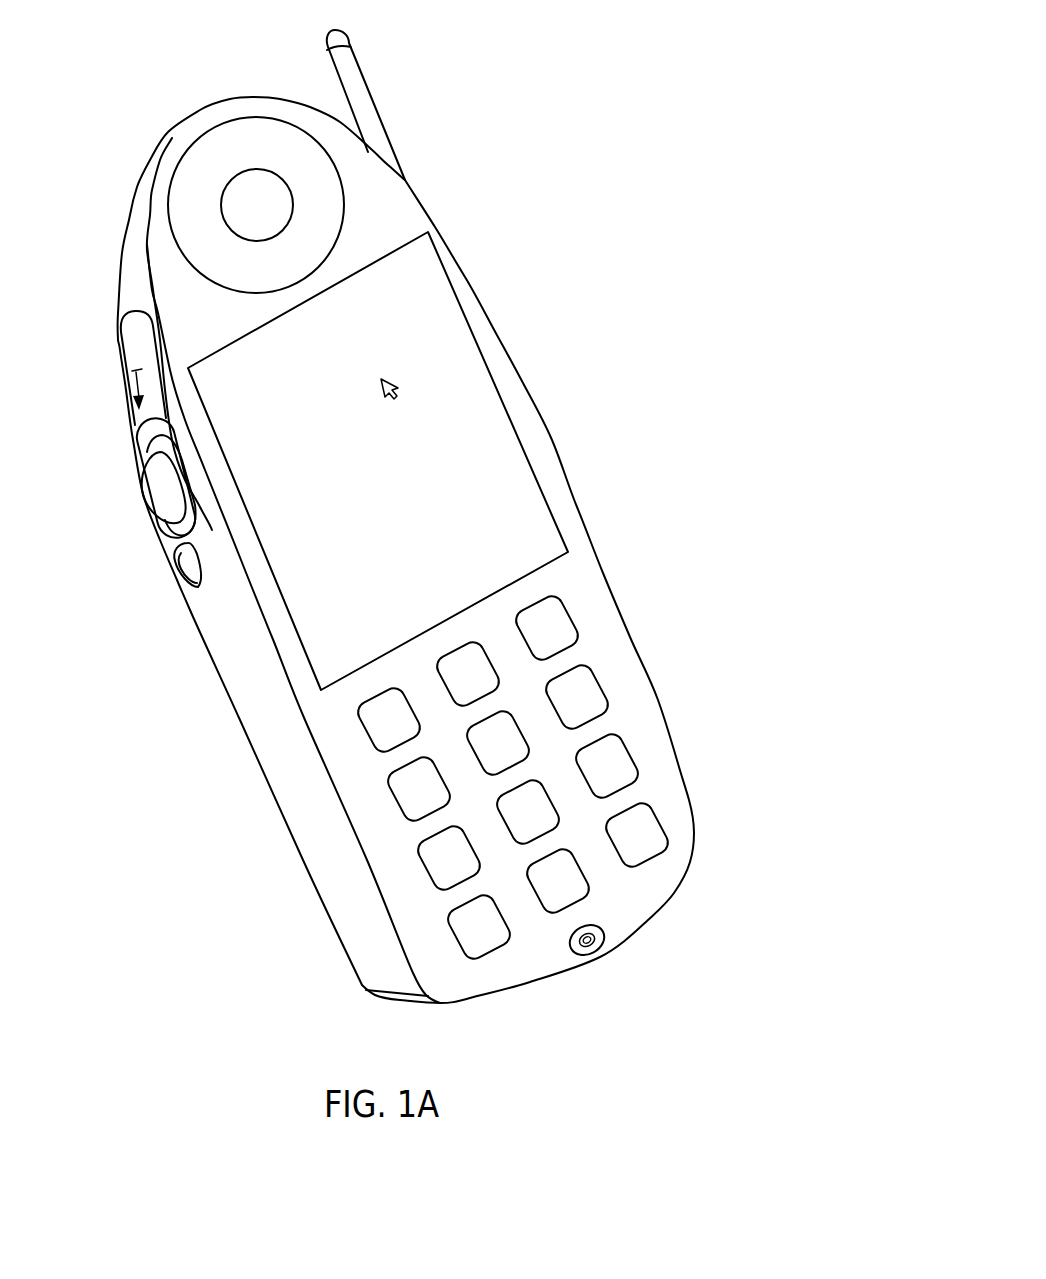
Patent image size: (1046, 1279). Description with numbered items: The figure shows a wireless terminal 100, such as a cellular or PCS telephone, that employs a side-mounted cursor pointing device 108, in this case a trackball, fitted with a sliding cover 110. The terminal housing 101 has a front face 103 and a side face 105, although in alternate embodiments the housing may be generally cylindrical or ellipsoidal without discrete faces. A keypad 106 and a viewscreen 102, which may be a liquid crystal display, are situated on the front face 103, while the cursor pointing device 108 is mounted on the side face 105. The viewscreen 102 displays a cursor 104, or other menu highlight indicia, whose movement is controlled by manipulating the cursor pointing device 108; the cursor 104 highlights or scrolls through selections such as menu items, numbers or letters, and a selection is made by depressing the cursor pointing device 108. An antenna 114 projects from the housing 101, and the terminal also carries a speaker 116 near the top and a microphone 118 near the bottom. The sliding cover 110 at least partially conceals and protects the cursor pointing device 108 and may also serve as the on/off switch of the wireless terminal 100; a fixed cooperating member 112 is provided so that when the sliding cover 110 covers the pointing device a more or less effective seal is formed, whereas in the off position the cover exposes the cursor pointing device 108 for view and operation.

The wireless terminal 100 is at (616, 53).
The terminal housing 101 is at (525, 387).
The viewscreen 102 is at (550, 503).
The front face 103 is at (405, 218).
The cursor 104 is at (414, 363).
The side face 105 is at (293, 780).
The keypad 106 is at (600, 632).
The cursor pointing device 108 is at (122, 486).
The sliding cover 110 is at (104, 388).
The cooperating member 112 is at (170, 586).
The antenna 114 is at (362, 98).
The speaker 116 is at (223, 137).
The microphone 118 is at (600, 953).